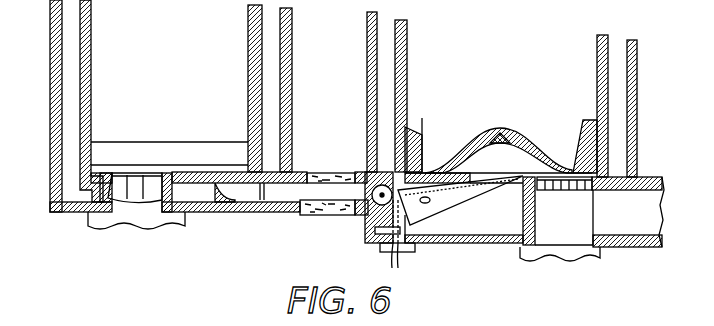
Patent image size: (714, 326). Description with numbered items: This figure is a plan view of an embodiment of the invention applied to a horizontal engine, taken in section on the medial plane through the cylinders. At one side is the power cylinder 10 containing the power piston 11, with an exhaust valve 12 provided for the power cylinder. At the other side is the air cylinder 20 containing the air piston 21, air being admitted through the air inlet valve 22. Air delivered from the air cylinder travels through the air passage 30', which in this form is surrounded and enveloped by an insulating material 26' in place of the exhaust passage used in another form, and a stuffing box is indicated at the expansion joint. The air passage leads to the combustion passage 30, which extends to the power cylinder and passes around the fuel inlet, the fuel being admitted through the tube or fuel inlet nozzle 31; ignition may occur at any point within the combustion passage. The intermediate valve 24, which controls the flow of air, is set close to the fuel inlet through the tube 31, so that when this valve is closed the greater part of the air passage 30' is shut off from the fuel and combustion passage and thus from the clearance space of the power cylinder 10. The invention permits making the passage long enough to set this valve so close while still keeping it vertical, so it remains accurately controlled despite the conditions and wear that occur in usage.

The power cylinder 10 is at (597, 67).
The power piston 11 is at (583, 126).
The exhaust valve 12 is at (580, 190).
The air cylinder 20 is at (248, 93).
The air piston 21 is at (220, 142).
The air inlet valve 22 is at (125, 178).
The intermediate valve 24 is at (362, 223).
The insulating material 26' is at (334, 225).
The combustion passage 30 is at (460, 200).
The air passage 30' is at (331, 166).
The fuel inlet nozzle 31 is at (423, 157).